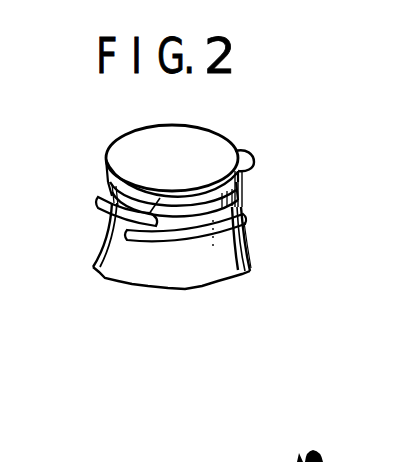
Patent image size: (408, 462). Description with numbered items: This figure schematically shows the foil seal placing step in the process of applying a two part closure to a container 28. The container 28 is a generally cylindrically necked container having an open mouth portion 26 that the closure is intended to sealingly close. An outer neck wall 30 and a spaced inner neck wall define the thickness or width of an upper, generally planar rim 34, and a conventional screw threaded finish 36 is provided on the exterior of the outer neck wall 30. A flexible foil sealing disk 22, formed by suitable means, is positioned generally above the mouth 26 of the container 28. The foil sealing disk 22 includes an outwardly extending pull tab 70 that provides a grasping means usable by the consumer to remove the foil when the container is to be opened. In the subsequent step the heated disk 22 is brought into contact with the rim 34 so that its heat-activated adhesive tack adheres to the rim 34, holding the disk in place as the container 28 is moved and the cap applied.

The flexible foil sealing disk 22 is at (184, 160).
The pull tab 70 is at (254, 158).
The rim 34 is at (232, 193).
The outer neck wall 30 is at (243, 208).
The screw threaded finish 36 is at (243, 227).
The open mouth portion 26 is at (110, 218).
The container 28 is at (128, 284).